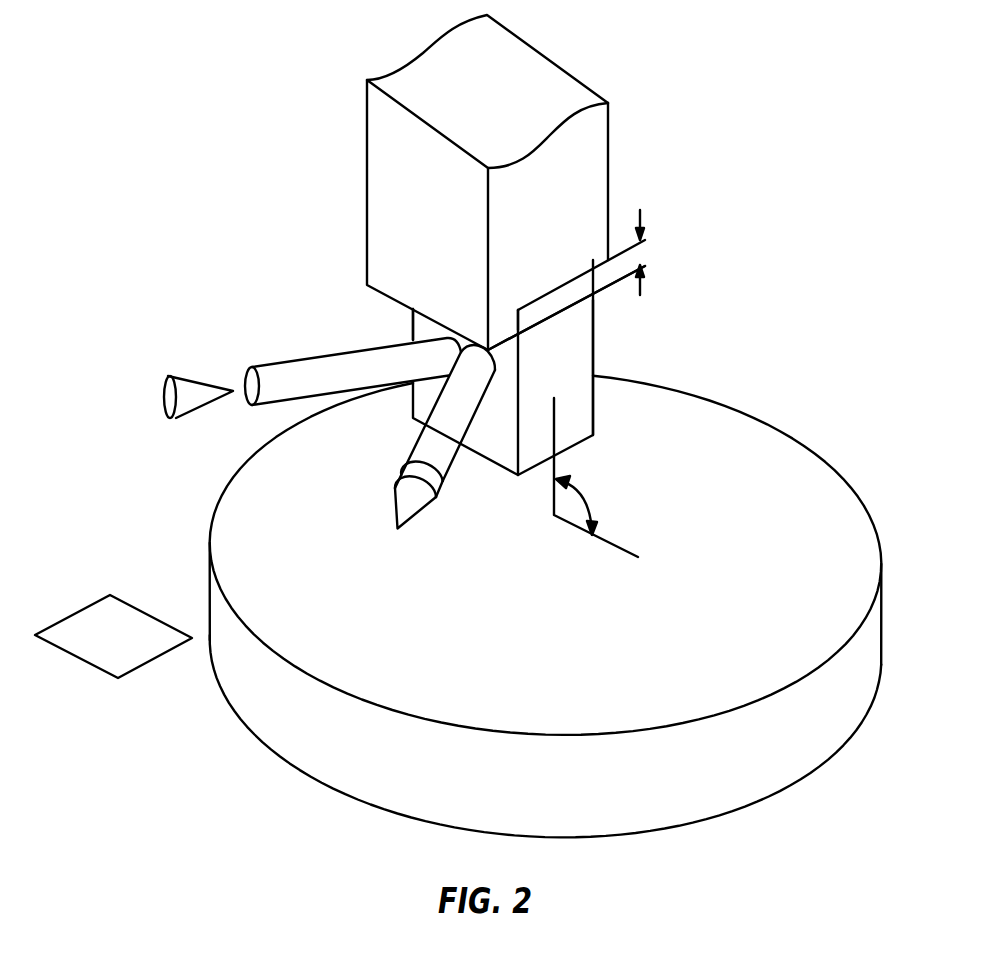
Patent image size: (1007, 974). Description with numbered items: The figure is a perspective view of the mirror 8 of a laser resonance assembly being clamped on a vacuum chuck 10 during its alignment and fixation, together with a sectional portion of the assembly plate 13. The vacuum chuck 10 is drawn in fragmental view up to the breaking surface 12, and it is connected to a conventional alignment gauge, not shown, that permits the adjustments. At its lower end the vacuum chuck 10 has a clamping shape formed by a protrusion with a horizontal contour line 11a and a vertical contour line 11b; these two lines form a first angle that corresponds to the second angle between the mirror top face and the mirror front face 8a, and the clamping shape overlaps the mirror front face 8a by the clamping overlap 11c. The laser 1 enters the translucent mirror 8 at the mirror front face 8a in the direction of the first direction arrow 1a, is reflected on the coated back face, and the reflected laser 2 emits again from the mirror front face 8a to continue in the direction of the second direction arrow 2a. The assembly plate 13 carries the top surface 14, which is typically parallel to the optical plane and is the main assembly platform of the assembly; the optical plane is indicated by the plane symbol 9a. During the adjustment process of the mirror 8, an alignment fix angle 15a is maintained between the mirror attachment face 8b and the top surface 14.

The laser 1 is at (266, 401).
The first direction arrow 1a is at (183, 411).
The reflected laser 2 is at (425, 447).
The second direction arrow 2a is at (403, 502).
The mirror 8 is at (593, 372).
The mirror front face 8a is at (413, 323).
The mirror attachment face 8b is at (582, 350).
The plate member 9a is at (90, 668).
The vacuum chuck 10 is at (388, 179).
The horizontal contour line 11a is at (559, 283).
The vertical contour line 11b is at (517, 322).
The clamping overlap 11c is at (646, 246).
The breaking surface 12 is at (522, 60).
The assembly plate 13 is at (867, 660).
The top surface 14 is at (749, 440).
The alignment fix angle 15a is at (594, 504).